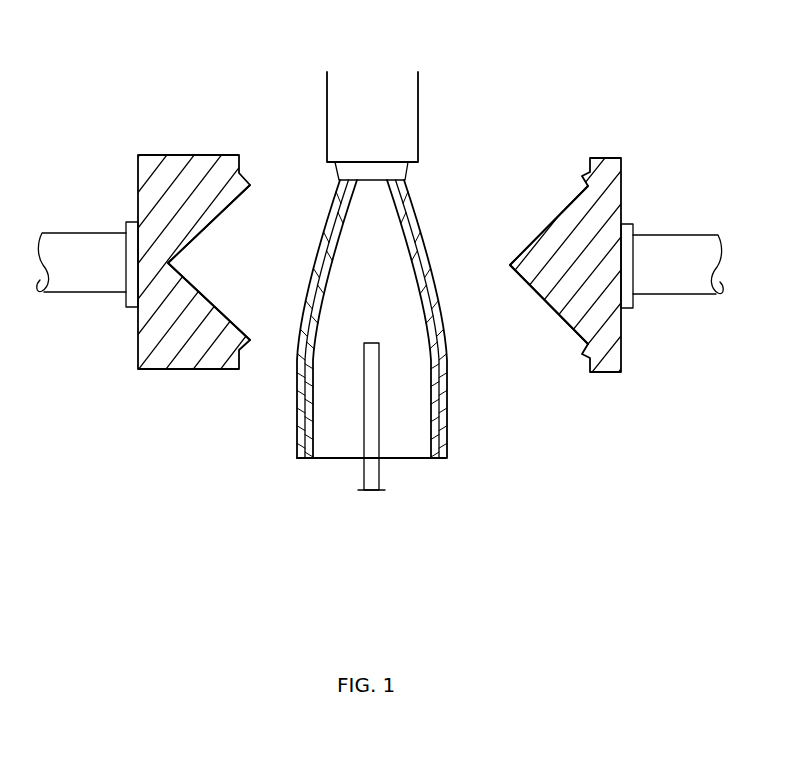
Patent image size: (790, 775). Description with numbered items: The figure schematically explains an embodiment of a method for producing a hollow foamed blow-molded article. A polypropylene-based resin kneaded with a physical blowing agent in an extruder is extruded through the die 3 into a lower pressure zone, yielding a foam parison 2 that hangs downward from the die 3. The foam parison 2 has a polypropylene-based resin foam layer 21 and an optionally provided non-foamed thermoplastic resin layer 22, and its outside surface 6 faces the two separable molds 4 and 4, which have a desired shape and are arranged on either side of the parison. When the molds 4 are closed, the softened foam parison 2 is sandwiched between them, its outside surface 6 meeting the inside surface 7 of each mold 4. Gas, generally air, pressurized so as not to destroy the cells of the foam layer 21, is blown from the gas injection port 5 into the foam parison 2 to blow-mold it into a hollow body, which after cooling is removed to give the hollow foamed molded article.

The foam parison 2 is at (389, 361).
The die 3 is at (408, 170).
The mold 4 is at (189, 180).
The gas injection port 5 is at (362, 473).
The outside surface of the foam parison 6 is at (354, 361).
The inside surface of the mold 7 is at (223, 214).
The foam layer 21 is at (433, 460).
The non-foamed thermoplastic resin layer 22 is at (440, 460).